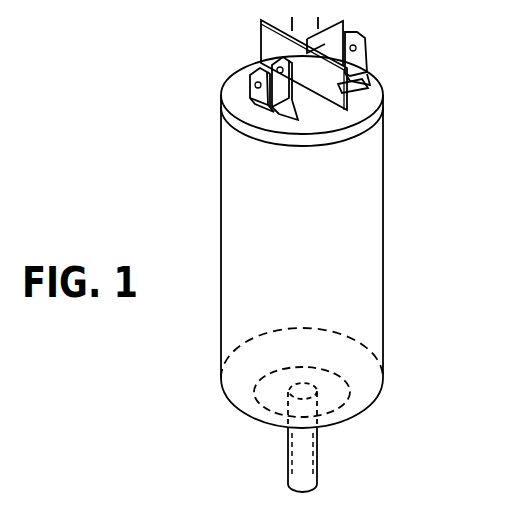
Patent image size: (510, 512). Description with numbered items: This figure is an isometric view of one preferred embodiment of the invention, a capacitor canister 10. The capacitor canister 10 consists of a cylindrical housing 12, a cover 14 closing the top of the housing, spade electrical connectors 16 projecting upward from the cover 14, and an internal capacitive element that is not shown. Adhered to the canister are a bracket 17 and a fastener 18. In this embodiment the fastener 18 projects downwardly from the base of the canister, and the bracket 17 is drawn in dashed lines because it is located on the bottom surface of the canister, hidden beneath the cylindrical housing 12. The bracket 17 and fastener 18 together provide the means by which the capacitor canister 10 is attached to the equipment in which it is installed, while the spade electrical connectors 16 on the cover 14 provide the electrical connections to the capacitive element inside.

The capacitor canister 10 is at (193, 77).
The cylindrical housing 12 is at (238, 185).
The cover 14 is at (325, 119).
The spade electrical connectors 16 is at (253, 84).
The bracket 17 is at (246, 414).
The fastener 18 is at (305, 462).